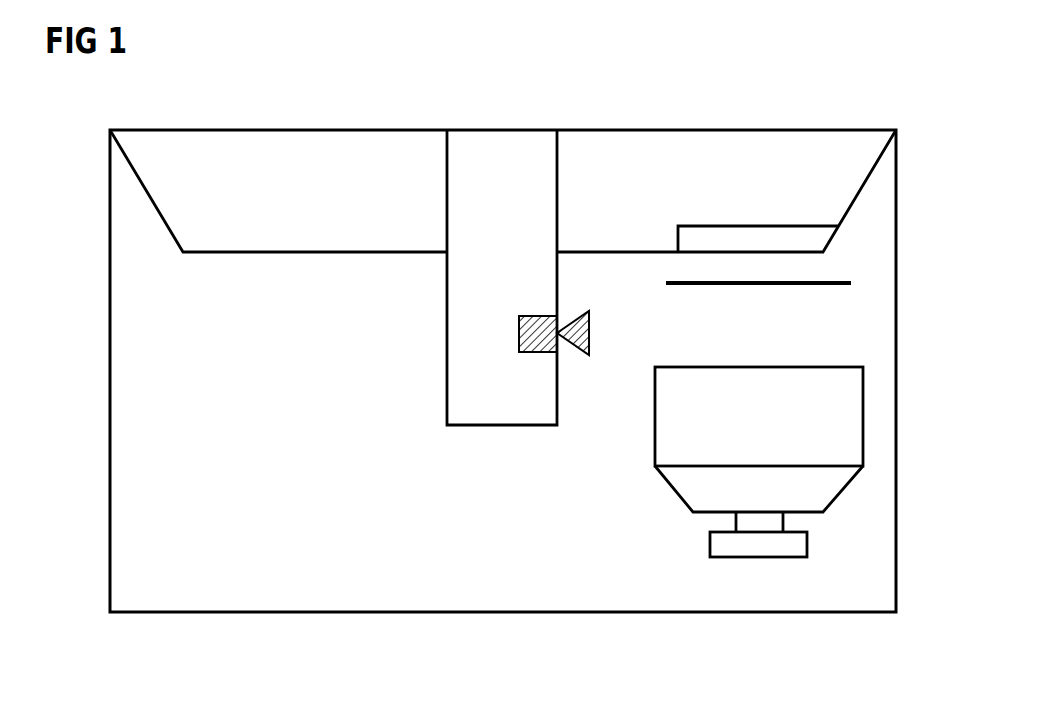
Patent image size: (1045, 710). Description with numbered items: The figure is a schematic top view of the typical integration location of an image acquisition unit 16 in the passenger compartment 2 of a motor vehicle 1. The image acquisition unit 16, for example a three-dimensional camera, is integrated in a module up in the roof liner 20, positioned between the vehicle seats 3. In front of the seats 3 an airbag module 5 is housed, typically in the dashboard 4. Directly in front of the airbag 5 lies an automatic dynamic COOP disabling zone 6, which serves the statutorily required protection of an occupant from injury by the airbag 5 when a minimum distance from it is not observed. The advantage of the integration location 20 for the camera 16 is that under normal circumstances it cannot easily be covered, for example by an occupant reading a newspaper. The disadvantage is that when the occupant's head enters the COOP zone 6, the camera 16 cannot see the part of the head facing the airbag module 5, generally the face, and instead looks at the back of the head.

The motor vehicle 1 is at (376, 118).
The passenger compartment 2 is at (512, 511).
The vehicle seats 3 is at (655, 443).
The dashboard 4 is at (840, 190).
The airbag module 5 is at (747, 237).
The automatic dynamic COOP disabling zone 6 is at (783, 286).
The image acquisition unit 16 is at (592, 331).
The roof liner 20 is at (460, 322).